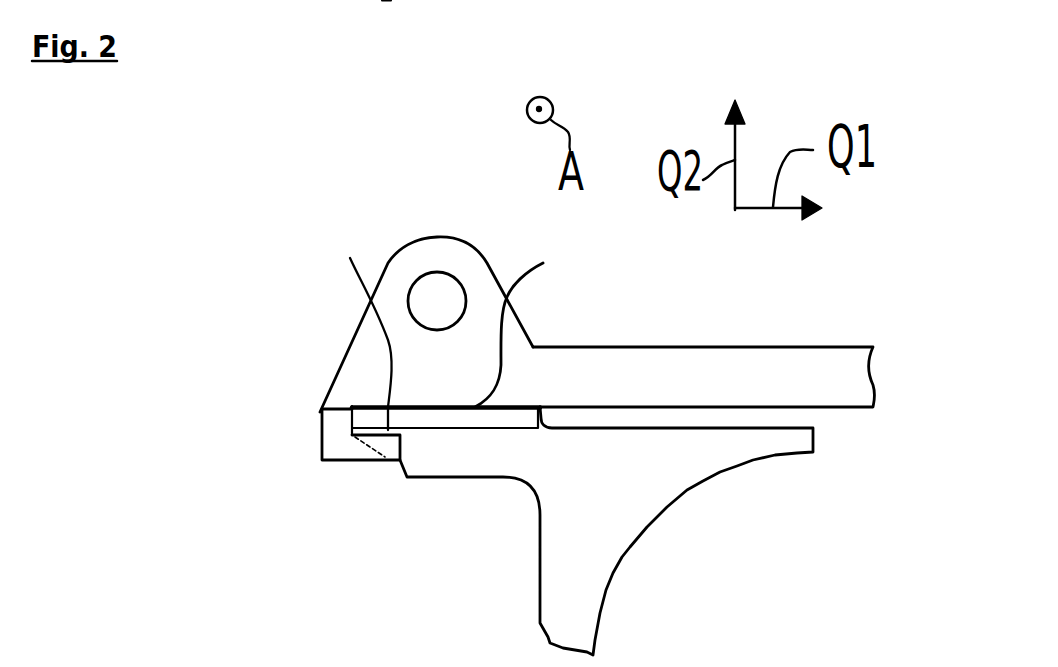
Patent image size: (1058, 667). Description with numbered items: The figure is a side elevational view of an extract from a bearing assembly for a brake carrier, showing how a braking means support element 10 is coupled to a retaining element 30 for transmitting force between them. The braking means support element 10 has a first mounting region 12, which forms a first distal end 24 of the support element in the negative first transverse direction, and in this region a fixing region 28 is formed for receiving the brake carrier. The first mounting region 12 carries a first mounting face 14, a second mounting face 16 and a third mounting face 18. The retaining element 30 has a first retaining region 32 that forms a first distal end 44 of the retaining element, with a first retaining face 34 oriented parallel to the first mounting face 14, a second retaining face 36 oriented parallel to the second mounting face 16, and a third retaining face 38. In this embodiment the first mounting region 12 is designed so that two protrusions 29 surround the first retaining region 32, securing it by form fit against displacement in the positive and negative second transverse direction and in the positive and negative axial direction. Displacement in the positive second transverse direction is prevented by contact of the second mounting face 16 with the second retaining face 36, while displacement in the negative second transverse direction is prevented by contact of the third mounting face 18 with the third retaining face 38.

The braking means support element 10 is at (700, 370).
The first mounting region 12 is at (393, 258).
The first distal end 24 is at (393, 258).
The second mounting face 16 is at (590, 267).
The third mounting face 18 is at (357, 249).
The fixing region 28 is at (412, 260).
The second retaining face 36 is at (433, 409).
The first mounting face 14 is at (246, 476).
The first retaining face 34 is at (246, 476).
The protrusion 29 is at (387, 447).
The third retaining face 38 is at (362, 437).
The first retaining region 32 is at (250, 566).
The first distal end 44 is at (350, 500).
The retaining element 30 is at (613, 513).